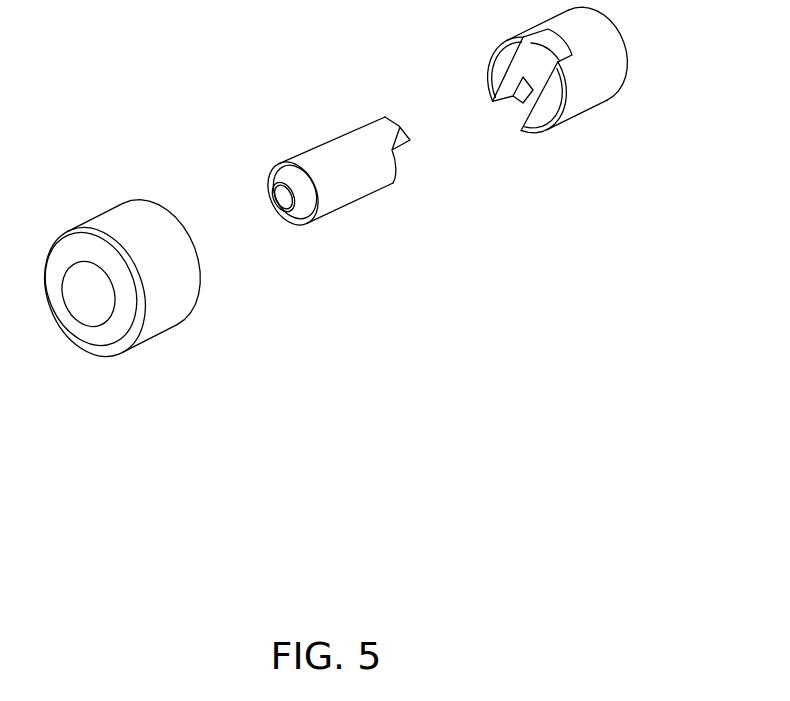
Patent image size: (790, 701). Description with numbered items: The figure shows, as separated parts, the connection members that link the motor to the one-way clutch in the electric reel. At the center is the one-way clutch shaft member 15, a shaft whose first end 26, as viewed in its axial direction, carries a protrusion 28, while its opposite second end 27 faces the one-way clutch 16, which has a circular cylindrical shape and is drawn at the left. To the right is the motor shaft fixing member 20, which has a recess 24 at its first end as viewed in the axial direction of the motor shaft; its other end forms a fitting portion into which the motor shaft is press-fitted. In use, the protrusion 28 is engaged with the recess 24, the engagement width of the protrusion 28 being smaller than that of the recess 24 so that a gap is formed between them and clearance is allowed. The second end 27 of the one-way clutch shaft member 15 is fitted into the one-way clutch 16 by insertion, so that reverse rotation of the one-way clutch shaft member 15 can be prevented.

The one-way clutch shaft member 15 is at (348, 169).
The one-way clutch 16 is at (110, 233).
The motor shaft fixing member 20 is at (548, 117).
The recess 24 is at (515, 115).
The first end 26 is at (365, 135).
The second end 27 is at (312, 157).
The protrusion 28 is at (395, 123).